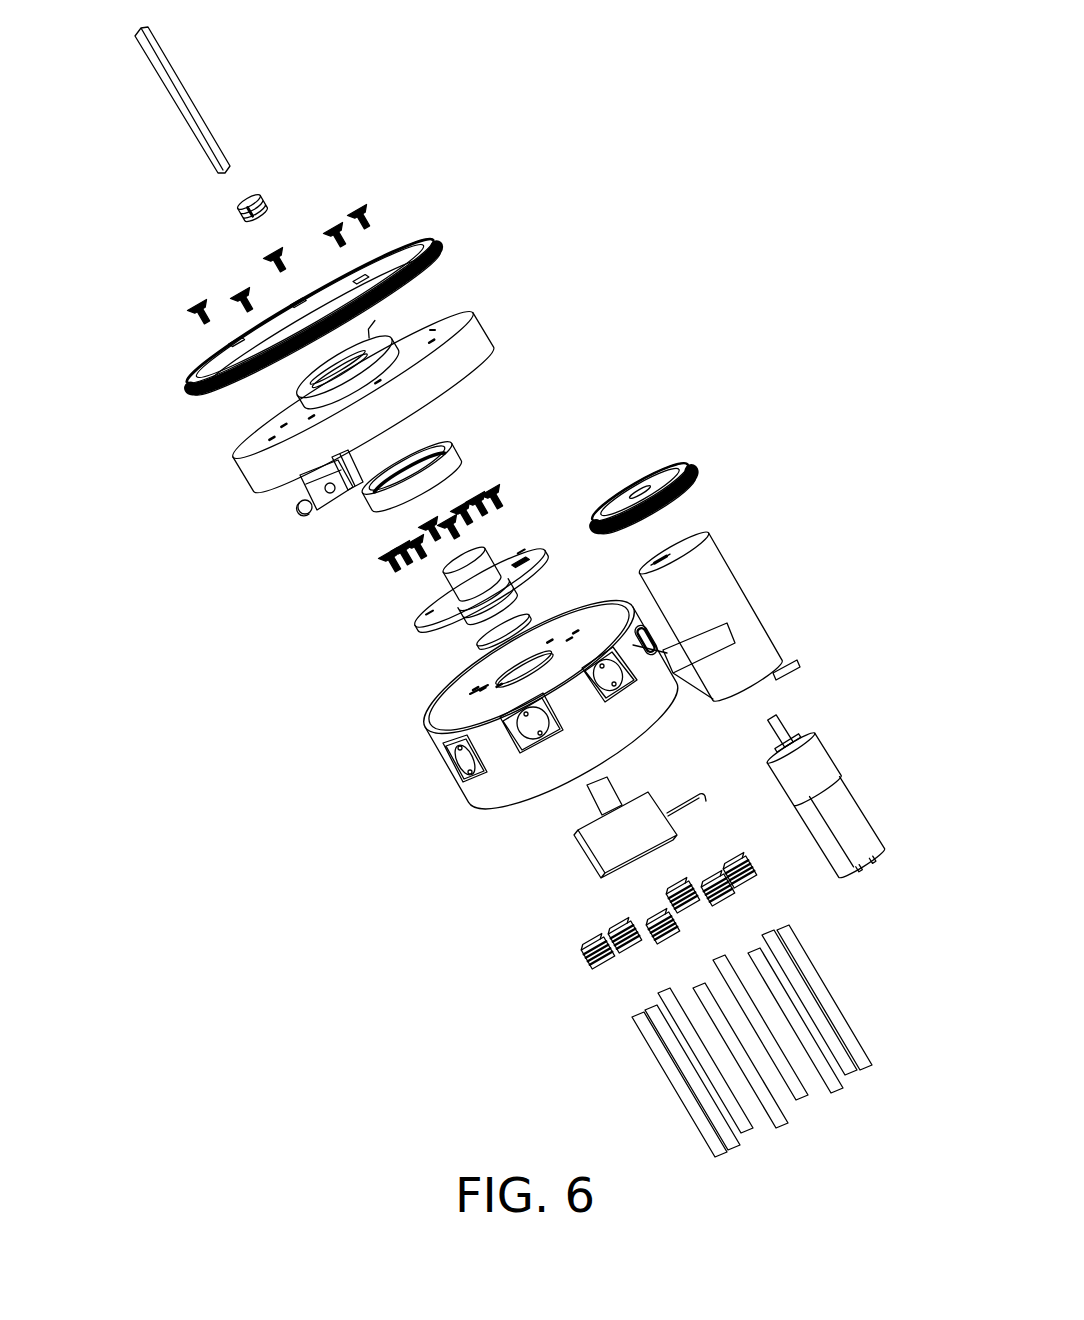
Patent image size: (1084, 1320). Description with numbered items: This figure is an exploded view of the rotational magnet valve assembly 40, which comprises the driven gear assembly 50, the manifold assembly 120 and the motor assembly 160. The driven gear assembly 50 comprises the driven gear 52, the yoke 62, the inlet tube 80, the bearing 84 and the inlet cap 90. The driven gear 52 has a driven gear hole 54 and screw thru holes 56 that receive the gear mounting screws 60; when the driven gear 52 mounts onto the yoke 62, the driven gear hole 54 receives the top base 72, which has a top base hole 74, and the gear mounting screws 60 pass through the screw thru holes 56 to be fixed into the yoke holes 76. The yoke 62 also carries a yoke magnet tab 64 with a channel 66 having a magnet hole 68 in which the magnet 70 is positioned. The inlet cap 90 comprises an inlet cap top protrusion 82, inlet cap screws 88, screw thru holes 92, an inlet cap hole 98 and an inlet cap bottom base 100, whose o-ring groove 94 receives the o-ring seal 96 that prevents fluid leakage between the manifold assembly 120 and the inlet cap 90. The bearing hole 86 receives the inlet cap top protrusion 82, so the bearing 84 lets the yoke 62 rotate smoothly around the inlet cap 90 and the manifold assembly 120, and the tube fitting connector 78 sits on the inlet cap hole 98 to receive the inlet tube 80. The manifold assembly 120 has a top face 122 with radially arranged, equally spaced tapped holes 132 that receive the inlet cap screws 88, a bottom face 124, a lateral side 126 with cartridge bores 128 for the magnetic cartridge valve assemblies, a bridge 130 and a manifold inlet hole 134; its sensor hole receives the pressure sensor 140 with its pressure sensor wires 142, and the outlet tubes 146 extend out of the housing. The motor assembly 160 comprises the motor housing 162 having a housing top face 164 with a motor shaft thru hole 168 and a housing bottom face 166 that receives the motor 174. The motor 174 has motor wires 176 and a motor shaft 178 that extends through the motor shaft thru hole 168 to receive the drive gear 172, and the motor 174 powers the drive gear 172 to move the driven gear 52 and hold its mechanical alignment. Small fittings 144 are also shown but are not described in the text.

The rotational magnet valve assembly 40 is at (115, 196).
The driven gear assembly 50 is at (493, 172).
The driven gear 52 is at (432, 249).
The driven gear hole 54 is at (360, 280).
The screw thru holes 56 is at (302, 300).
The gear mounting screws 60 is at (363, 210).
The yoke 62 is at (247, 473).
The yoke magnet tab 64 is at (352, 473).
The channel 66 is at (345, 505).
The magnet hole 68 is at (292, 495).
The magnet 70 is at (293, 515).
The top base 72 is at (407, 338).
The top base hole 74 is at (387, 350).
The yoke holes 76 is at (435, 332).
The tube fitting connector 78 is at (262, 201).
The inlet tube 80 is at (182, 83).
The inlet cap top protrusion 82 is at (483, 550).
The bearing 84 is at (455, 450).
The bearing hole 86 is at (425, 450).
The inlet cap screws 88 is at (490, 490).
The inlet cap 90 is at (423, 623).
The screw thru holes 92 is at (525, 552).
The o-ring groove 94 is at (470, 627).
The o-ring seal 96 is at (505, 640).
The inlet cap hole 98 is at (442, 560).
The inlet cap bottom base 100 is at (507, 570).
The manifold assembly 120 is at (345, 826).
The top face 122 is at (440, 713).
The bottom face 124 is at (533, 773).
The lateral side 126 is at (500, 775).
The cartridge bores 128 is at (600, 693).
The bridge 130 is at (683, 673).
The tapped holes 132 is at (571, 630).
The manifold inlet hole 134 is at (537, 657).
The pressure sensor 140 is at (587, 860).
The pressure sensor wires 142 is at (683, 803).
The connectors 144 is at (593, 962).
The outlet tubes 146 is at (657, 1053).
The motor assembly 160 is at (788, 550).
The motor housing 162 is at (760, 643).
The housing top face 164 is at (697, 532).
The housing bottom face 166 is at (777, 677).
The motor shaft thru hole 168 is at (672, 548).
The drive gear 172 is at (688, 470).
The motor 174 is at (863, 813).
The motor wires 176 is at (918, 882).
The motor shaft 178 is at (833, 709).